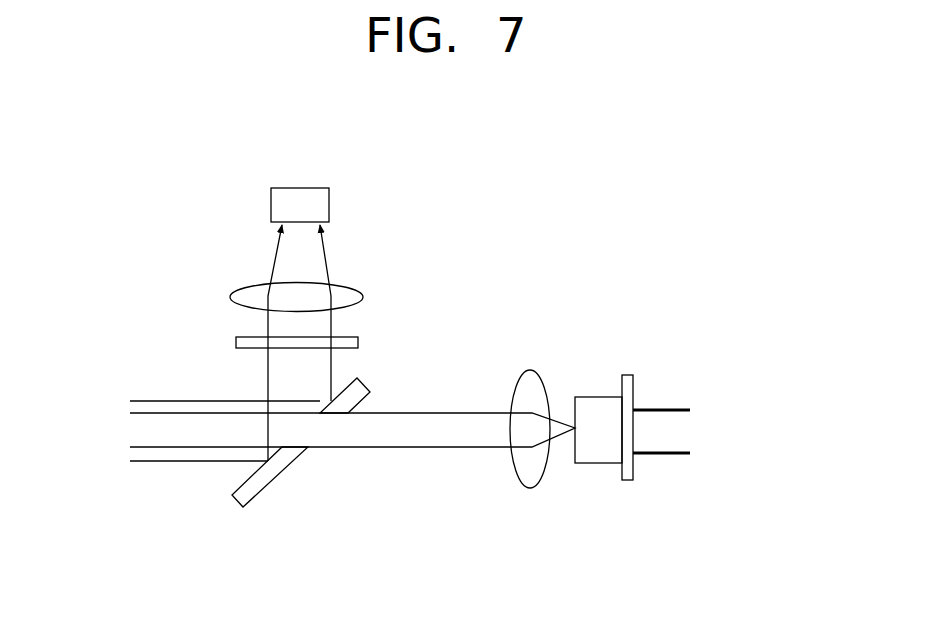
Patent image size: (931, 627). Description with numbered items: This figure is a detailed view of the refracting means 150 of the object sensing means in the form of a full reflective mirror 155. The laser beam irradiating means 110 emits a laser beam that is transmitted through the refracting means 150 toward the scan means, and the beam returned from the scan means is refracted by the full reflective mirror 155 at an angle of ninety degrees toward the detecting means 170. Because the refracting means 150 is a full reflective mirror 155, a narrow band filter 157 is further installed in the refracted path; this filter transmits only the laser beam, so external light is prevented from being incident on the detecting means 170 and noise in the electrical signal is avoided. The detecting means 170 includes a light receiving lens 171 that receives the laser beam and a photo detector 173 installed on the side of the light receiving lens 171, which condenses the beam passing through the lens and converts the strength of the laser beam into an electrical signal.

The laser beam irradiating means 110 is at (588, 482).
The refracting means 150 is at (198, 368).
The full reflective mirror 155 is at (265, 478).
The narrow band filter 157 is at (358, 343).
The detecting means 170 is at (272, 178).
The light receiving lens 171 is at (358, 298).
The photo detector 173 is at (322, 207).